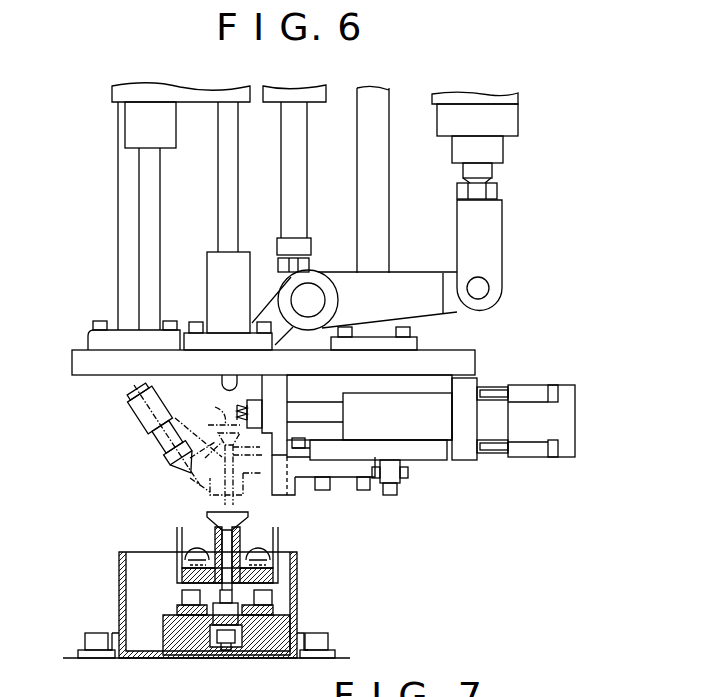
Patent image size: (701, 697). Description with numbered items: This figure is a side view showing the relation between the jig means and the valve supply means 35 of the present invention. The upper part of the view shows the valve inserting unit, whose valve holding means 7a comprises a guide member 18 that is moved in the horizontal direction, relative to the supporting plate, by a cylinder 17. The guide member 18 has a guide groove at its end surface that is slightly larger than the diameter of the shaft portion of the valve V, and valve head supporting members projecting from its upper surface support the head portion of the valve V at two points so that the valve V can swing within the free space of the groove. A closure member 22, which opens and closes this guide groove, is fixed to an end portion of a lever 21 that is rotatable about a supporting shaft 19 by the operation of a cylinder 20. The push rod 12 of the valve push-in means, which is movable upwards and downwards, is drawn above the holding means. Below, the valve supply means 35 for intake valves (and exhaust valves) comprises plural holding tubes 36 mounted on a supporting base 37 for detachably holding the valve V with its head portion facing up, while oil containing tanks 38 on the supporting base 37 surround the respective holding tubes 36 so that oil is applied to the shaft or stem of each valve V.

The push rod 12 is at (233, 188).
The cylinder 17 is at (527, 398).
The guide member 18 is at (350, 488).
The supporting shaft 19 is at (312, 303).
The cylinder 20 is at (481, 98).
The lever 21 is at (172, 378).
The closure member 22 is at (170, 472).
The valve supply means 35 is at (162, 657).
The holding tube 36 is at (217, 538).
The supporting base 37 is at (267, 637).
The oil containing tank 38 is at (280, 546).
The valve holding means 7a is at (315, 498).
The valve V is at (226, 451).